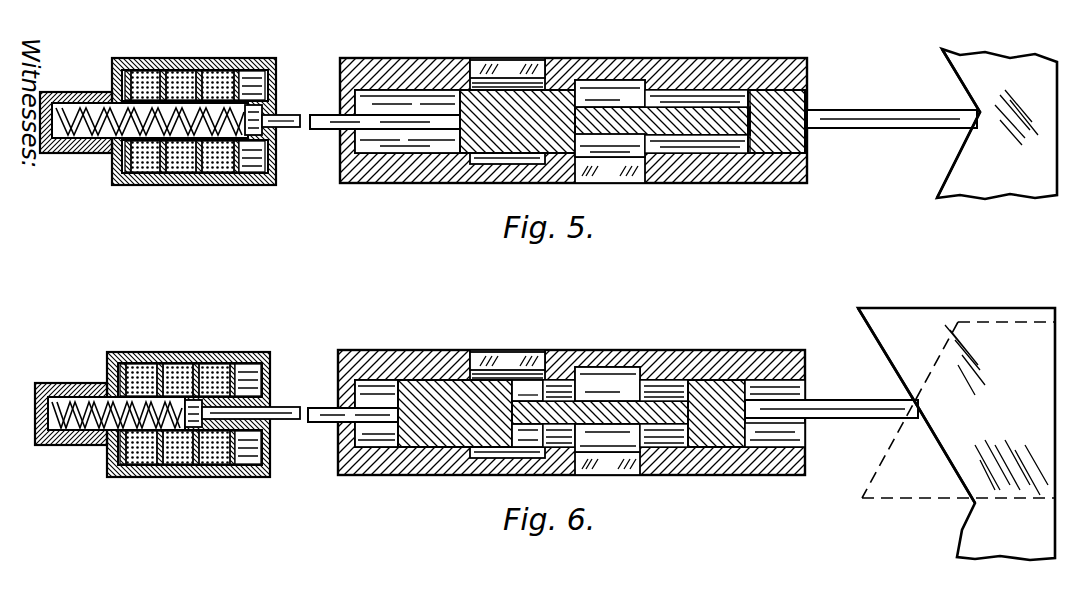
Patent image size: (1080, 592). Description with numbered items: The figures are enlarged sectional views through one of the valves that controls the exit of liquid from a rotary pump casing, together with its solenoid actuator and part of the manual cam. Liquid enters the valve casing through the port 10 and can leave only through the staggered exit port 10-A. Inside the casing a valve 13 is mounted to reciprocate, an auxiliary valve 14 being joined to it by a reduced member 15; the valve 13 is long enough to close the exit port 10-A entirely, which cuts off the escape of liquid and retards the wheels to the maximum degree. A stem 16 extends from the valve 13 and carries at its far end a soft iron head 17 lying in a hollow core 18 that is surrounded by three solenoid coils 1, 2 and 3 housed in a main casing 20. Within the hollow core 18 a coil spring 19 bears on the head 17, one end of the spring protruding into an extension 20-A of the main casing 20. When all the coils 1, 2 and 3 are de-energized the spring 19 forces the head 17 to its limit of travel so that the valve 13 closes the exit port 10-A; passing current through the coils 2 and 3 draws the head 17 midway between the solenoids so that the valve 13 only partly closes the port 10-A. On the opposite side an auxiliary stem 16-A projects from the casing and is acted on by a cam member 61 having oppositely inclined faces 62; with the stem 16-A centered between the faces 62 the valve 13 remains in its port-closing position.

In FIG. 5, the solenoid coil 1 is at (145, 58).
In FIG. 6, the solenoid coil 1 is at (136, 352).
In FIG. 5, the solenoid coil 2 is at (187, 58).
In FIG. 6, the solenoid coil 2 is at (173, 352).
In FIG. 5, the solenoid coil 3 is at (223, 58).
In FIG. 6, the solenoid coil 3 is at (209, 352).
In FIG. 5, the port 10 is at (605, 182).
In FIG. 6, the port 10 is at (610, 468).
In FIG. 5, the exit port 10-A is at (516, 61).
In FIG. 6, the exit port 10-A is at (481, 352).
In FIG. 5, the valve 13 is at (553, 100).
In FIG. 6, the valve 13 is at (489, 388).
In FIG. 5, the auxiliary valve 14 is at (808, 96).
In FIG. 6, the auxiliary valve 14 is at (717, 387).
In FIG. 5, the reduced member 15 is at (710, 112).
In FIG. 6, the reduced member 15 is at (603, 406).
In FIG. 5, the stem 16 is at (323, 131).
In FIG. 6, the stem 16 is at (362, 414).
In FIG. 5, the auxiliary stem 16-A is at (868, 125).
In FIG. 6, the auxiliary stem 16-A is at (840, 413).
In FIG. 5, the head 17 is at (278, 100).
In FIG. 6, the head 17 is at (192, 400).
In FIG. 5, the hollow core 18 is at (245, 94).
In FIG. 6, the hollow core 18 is at (235, 388).
In FIG. 5, the coil spring 19 is at (108, 132).
In FIG. 6, the coil spring 19 is at (100, 432).
In FIG. 5, the main casing 20 is at (215, 180).
In FIG. 6, the main casing 20 is at (200, 478).
In FIG. 5, the extension 20-A is at (74, 92).
In FIG. 6, the extension 20-A is at (70, 383).
In FIG. 5, the cam member 61 is at (997, 124).
In FIG. 6, the cam member 61 is at (956, 434).
In FIG. 5, the inclined faces 62 is at (965, 77).
In FIG. 6, the inclined faces 62 is at (876, 340).